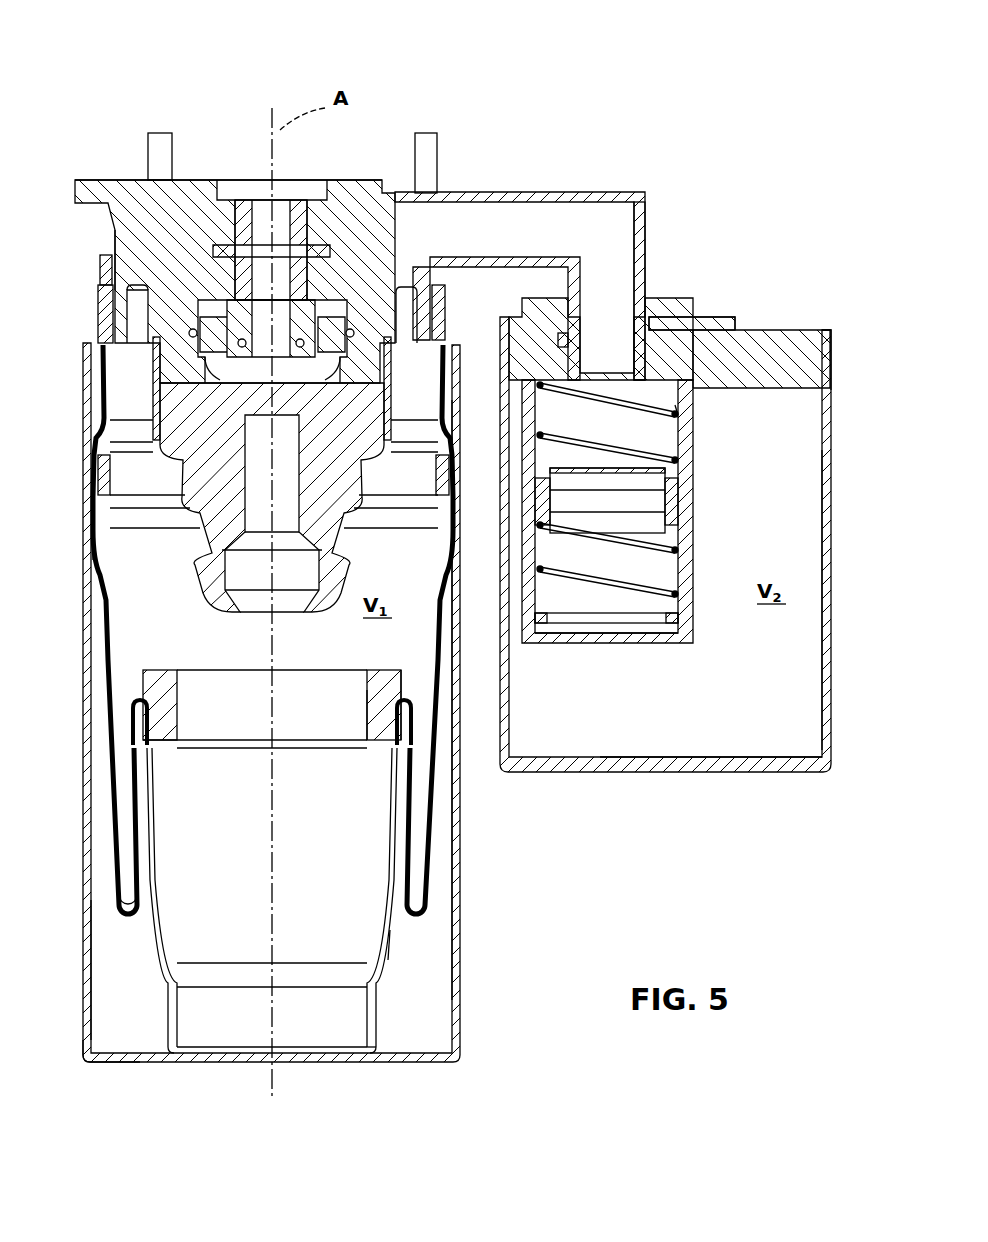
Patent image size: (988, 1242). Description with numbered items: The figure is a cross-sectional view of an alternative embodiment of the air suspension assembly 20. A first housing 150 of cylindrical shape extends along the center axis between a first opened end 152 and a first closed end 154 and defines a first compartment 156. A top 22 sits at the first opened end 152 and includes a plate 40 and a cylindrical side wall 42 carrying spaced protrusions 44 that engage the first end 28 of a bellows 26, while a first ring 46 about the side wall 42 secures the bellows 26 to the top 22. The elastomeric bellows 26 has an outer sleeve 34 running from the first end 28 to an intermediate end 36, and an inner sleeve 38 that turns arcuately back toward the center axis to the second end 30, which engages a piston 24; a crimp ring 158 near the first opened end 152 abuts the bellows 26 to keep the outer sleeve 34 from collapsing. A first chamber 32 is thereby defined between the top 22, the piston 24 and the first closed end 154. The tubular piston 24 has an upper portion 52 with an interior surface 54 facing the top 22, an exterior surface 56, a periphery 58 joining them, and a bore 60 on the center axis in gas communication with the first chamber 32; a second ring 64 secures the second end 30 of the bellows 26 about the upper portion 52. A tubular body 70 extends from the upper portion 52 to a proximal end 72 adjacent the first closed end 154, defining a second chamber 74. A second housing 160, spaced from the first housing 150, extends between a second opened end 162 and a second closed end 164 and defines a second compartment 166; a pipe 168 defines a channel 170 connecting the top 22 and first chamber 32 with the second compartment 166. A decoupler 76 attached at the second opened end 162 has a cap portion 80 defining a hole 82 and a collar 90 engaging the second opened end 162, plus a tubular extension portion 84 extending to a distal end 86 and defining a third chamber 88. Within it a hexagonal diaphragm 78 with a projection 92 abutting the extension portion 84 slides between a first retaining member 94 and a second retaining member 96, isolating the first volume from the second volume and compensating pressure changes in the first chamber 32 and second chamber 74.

The air suspension assembly 20 is at (76, 88).
The top 22 is at (128, 176).
The plate 40 is at (105, 190).
The side wall 42 is at (113, 232).
The first end 28 is at (106, 272).
The protrusions 44 is at (102, 308).
The first opened end 152 is at (88, 342).
The crimp ring 158 is at (100, 472).
The first chamber 32 is at (93, 556).
The bellows 26 is at (100, 620).
The outer sleeve 34 is at (100, 662).
The intermediate end 36 is at (118, 914).
The first compartment 156 is at (90, 968).
The first closed end 154 is at (84, 1060).
The interior surface 54 is at (158, 668).
The second end 30 is at (152, 722).
The exterior surface 56 is at (160, 742).
The inner sleeve 38 is at (142, 882).
The upper portion 52 is at (375, 668).
The periphery 58 is at (403, 700).
The bore 60 is at (372, 708).
The second ring 64 is at (416, 736).
The body 70 is at (428, 830).
The first housing 150 is at (460, 870).
The second chamber 74 is at (388, 950).
The piston 24 is at (384, 997).
The proximal end 72 is at (373, 1052).
The first ring 46 is at (446, 310).
The pipe 168 is at (548, 192).
The channel 170 is at (645, 232).
The cap portion 80 is at (660, 320).
The collar 90 is at (712, 318).
The second housing 160 is at (790, 330).
The second opened end 162 is at (828, 330).
The hole 82 is at (568, 340).
The first retaining member 94 is at (690, 412).
The decoupler 76 is at (700, 435).
The diaphragm 78 is at (665, 471).
The projection 92 is at (680, 492).
The extension portion 84 is at (688, 510).
The third chamber 88 is at (680, 562).
The second retaining member 96 is at (690, 616).
The distal end 86 is at (684, 644).
The second compartment 166 is at (826, 545).
The second closed end 164 is at (822, 773).